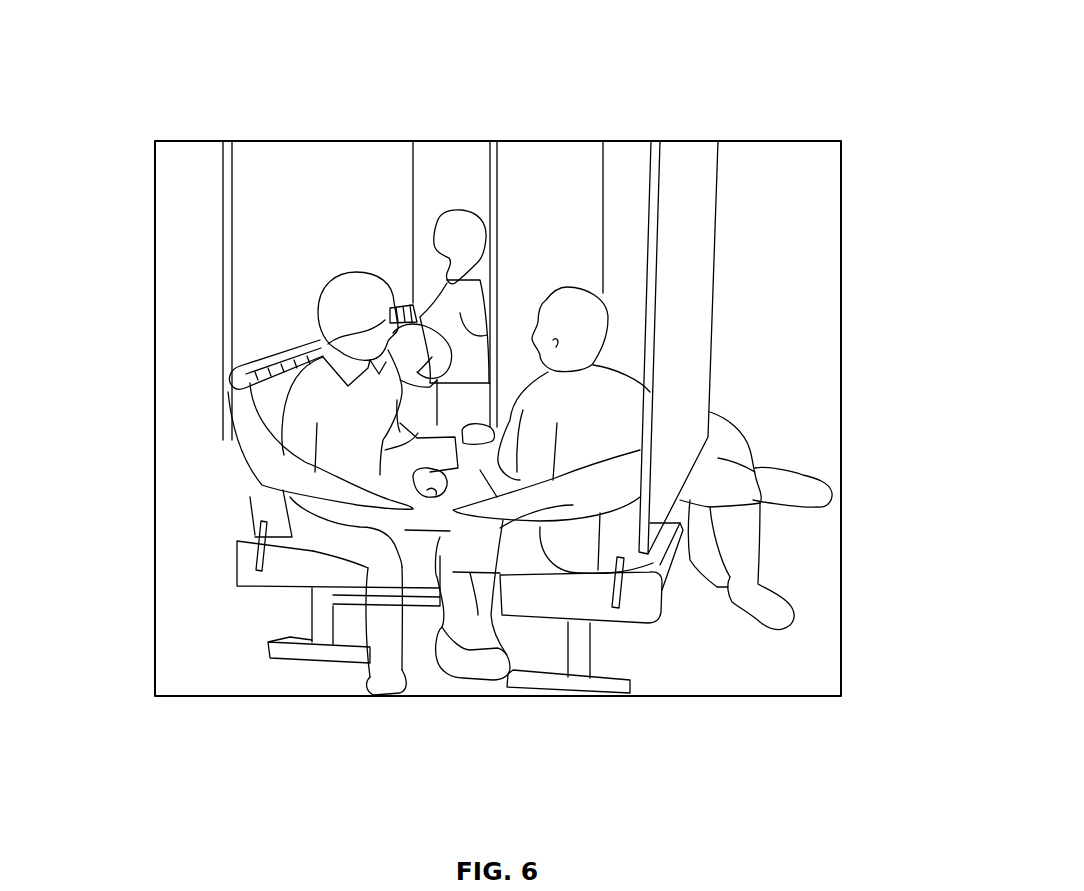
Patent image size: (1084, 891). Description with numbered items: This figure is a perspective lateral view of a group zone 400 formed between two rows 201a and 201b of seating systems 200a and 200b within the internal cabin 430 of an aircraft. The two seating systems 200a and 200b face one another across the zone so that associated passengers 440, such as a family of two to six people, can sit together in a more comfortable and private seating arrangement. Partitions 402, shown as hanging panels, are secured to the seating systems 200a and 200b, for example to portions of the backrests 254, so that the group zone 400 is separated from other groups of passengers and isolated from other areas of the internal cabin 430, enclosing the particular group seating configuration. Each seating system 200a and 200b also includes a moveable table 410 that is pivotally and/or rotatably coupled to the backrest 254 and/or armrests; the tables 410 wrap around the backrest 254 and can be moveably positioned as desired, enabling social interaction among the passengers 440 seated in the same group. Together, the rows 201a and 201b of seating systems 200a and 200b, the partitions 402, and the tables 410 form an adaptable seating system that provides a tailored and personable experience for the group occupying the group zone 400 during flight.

The group zone 400 is at (464, 96).
The partition 402 is at (267, 172).
The backrest 254 is at (262, 366).
The passenger 440 is at (297, 413).
The seating system 200a is at (214, 466).
The seating system 200b is at (640, 605).
The row 201a is at (283, 590).
The row 201b is at (572, 650).
The moveable table 410 is at (333, 503).
The internal cabin 430 is at (826, 434).